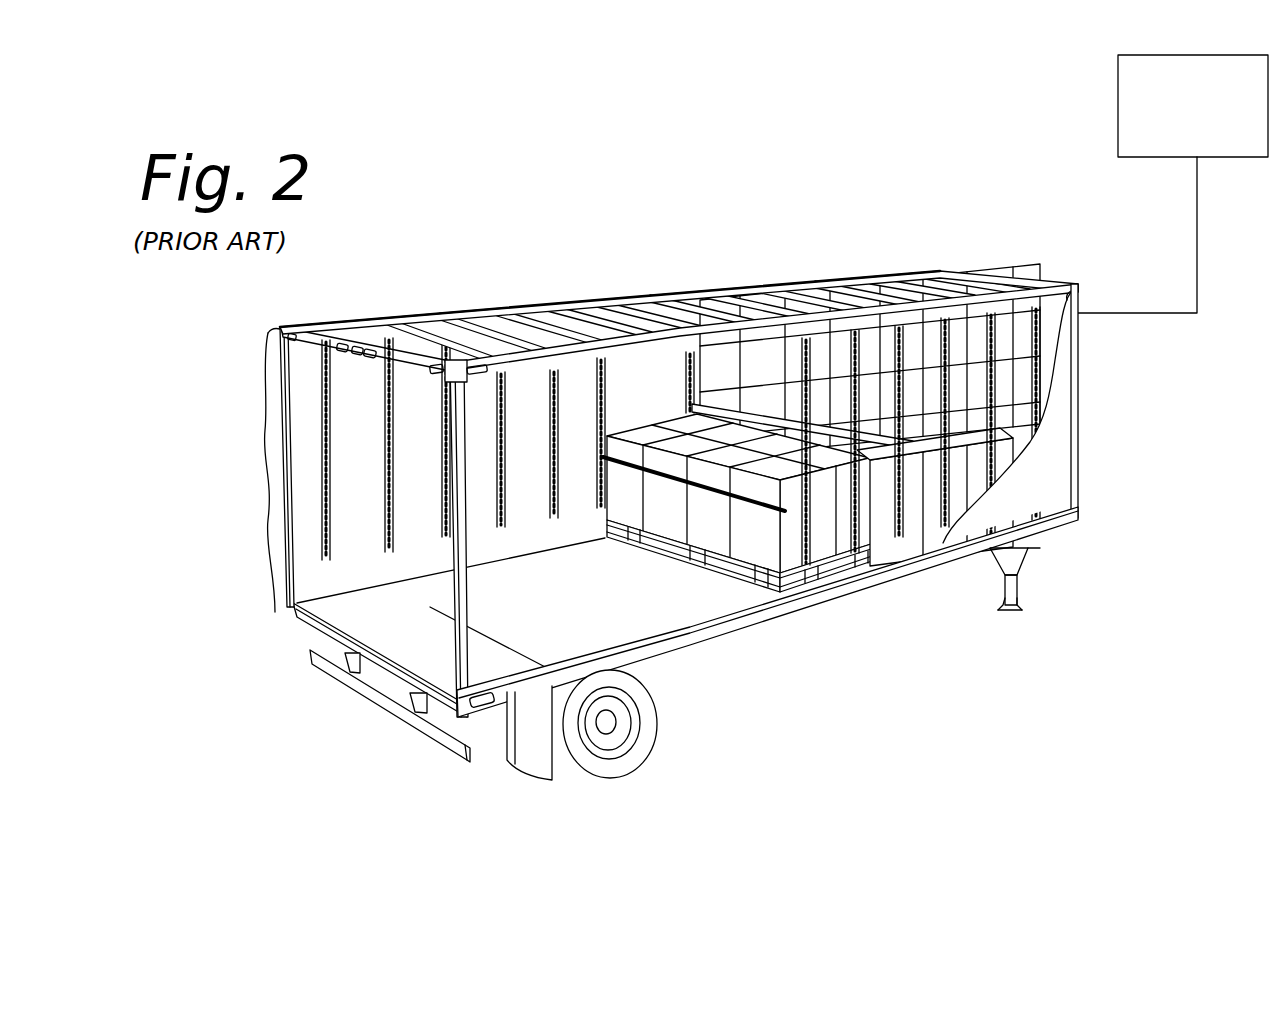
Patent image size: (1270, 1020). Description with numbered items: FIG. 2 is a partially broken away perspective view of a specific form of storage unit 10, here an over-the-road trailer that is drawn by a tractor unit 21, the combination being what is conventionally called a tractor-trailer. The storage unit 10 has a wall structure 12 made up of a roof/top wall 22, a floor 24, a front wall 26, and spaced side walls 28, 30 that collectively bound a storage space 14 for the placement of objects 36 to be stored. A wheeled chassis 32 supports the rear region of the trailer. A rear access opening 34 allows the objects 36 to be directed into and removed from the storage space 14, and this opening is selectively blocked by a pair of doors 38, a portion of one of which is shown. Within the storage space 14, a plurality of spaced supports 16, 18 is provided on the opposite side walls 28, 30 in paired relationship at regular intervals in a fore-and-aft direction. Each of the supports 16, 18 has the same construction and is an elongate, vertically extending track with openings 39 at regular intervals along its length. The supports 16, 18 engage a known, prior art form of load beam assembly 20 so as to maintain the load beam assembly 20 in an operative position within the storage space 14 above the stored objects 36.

The storage unit 10 is at (684, 488).
The wall structure 12 is at (1032, 485).
The storage space 14 is at (360, 553).
The support 16 is at (857, 556).
The support 18 is at (593, 397).
The load beam assembly 20 is at (753, 436).
The tractor unit 21 is at (1182, 143).
The roof/top wall 22 is at (462, 310).
The floor 24 is at (670, 628).
The front wall 26 is at (1079, 412).
The side wall 28 is at (1013, 508).
The side wall 30 is at (360, 392).
The wheeled chassis 32 is at (636, 764).
The rear access opening 34 is at (305, 578).
The objects 36 is at (663, 518).
The doors 38 is at (273, 537).
The openings 39 is at (322, 428).